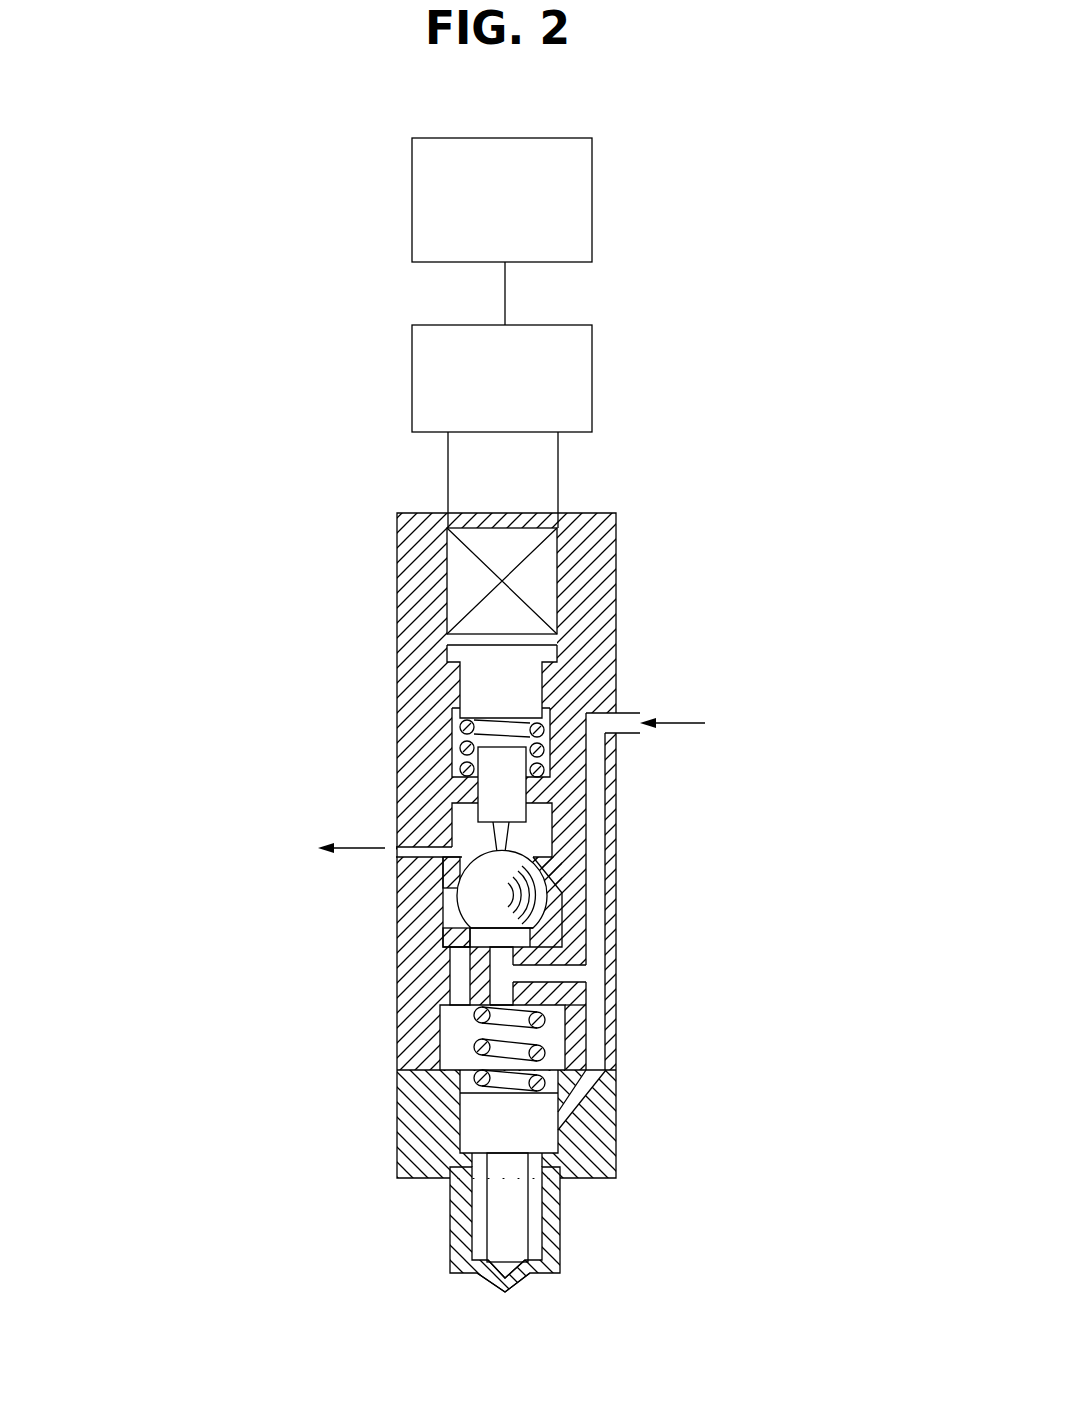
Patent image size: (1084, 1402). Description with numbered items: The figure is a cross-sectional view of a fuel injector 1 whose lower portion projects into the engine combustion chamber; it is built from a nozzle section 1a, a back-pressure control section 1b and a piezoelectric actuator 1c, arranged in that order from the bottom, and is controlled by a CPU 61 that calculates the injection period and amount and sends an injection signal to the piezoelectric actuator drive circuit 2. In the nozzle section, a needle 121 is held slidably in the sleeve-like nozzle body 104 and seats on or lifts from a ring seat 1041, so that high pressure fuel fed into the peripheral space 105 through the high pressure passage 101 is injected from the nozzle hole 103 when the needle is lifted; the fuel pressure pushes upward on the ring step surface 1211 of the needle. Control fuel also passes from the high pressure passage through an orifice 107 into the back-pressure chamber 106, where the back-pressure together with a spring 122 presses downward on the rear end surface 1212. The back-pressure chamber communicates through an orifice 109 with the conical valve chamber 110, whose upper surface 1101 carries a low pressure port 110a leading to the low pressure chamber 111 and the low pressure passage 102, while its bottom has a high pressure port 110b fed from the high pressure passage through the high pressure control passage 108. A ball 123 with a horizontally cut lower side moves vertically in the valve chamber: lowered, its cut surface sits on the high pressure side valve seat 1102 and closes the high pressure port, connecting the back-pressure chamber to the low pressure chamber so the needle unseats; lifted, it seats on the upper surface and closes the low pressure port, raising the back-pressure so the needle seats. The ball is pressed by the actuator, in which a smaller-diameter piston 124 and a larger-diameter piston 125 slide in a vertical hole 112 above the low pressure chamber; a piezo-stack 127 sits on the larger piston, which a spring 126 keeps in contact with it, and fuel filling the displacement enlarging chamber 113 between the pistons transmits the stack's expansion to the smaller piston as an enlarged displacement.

The injector 1 is at (343, 522).
The nozzle section 1a is at (808, 1152).
The back-pressure control section 1b is at (819, 867).
The piezoelectric actuator 1c is at (810, 568).
The piezoelectric actuator drive circuit 2 is at (592, 372).
The CPU 61 is at (412, 198).
The high pressure passage 101 is at (597, 770).
The low pressure passage 102 is at (428, 848).
The nozzle hole 103 is at (503, 1278).
The nozzle body 104 is at (560, 1232).
The ring seat 1041 is at (488, 1258).
The peripheral space 105 is at (480, 1192).
The back-pressure chamber 106 is at (452, 1027).
The orifice 107 is at (567, 1006).
The high pressure control passage 108 is at (516, 988).
The orifice 109 is at (450, 952).
The valve chamber 110 is at (452, 923).
The low pressure port 110a is at (532, 851).
The high pressure port 110b is at (505, 975).
The upper surface 1101 is at (522, 928).
The valve seat 1102 is at (550, 940).
The low pressure chamber 111 is at (537, 833).
The vertical hole 112 is at (455, 752).
The displacement enlarging chamber 113 is at (598, 698).
The needle 121 is at (518, 1123).
The ring step surface 1211 is at (548, 1160).
The rear end surface 1212 is at (592, 1074).
The spring 122 is at (480, 1045).
The ball 123 is at (480, 898).
The smaller-diameter piston 124 is at (493, 795).
The larger-diameter piston 125 is at (485, 688).
The spring 126 is at (463, 728).
The piezo-stack 127 is at (543, 570).